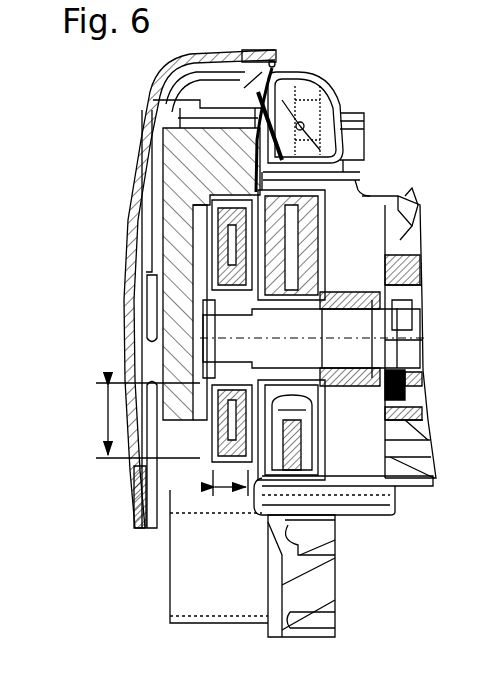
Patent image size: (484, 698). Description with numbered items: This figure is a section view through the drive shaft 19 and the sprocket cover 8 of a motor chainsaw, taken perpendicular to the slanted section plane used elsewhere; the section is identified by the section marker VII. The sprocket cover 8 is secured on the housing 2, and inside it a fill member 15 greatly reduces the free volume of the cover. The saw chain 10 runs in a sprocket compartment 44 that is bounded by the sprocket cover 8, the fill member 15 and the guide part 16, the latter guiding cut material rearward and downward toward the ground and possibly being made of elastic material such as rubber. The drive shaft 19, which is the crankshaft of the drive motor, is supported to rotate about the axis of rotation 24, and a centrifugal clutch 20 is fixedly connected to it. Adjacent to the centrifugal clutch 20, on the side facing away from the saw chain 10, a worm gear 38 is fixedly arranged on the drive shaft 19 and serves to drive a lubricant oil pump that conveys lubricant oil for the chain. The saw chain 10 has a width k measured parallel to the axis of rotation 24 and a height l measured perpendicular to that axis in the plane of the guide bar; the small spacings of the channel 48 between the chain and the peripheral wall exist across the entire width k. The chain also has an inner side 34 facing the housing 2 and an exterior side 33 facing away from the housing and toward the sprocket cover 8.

The housing 2 is at (317, 582).
The sprocket cover 8 is at (258, 54).
The saw chain 10 is at (178, 256).
The fill member 15 is at (207, 152).
The guide part 16 is at (202, 585).
The drive shaft 19 is at (392, 465).
The centrifugal clutch 20 is at (326, 472).
The axis of rotation 24 is at (404, 340).
The exterior side 33 is at (256, 204).
The inner side 34 is at (362, 180).
The worm gear 38 is at (414, 228).
The sprocket compartment 44 is at (178, 462).
The channel 48 is at (302, 124).
The section line VII is at (176, 186).
The height l is at (147, 420).
The width k is at (222, 492).